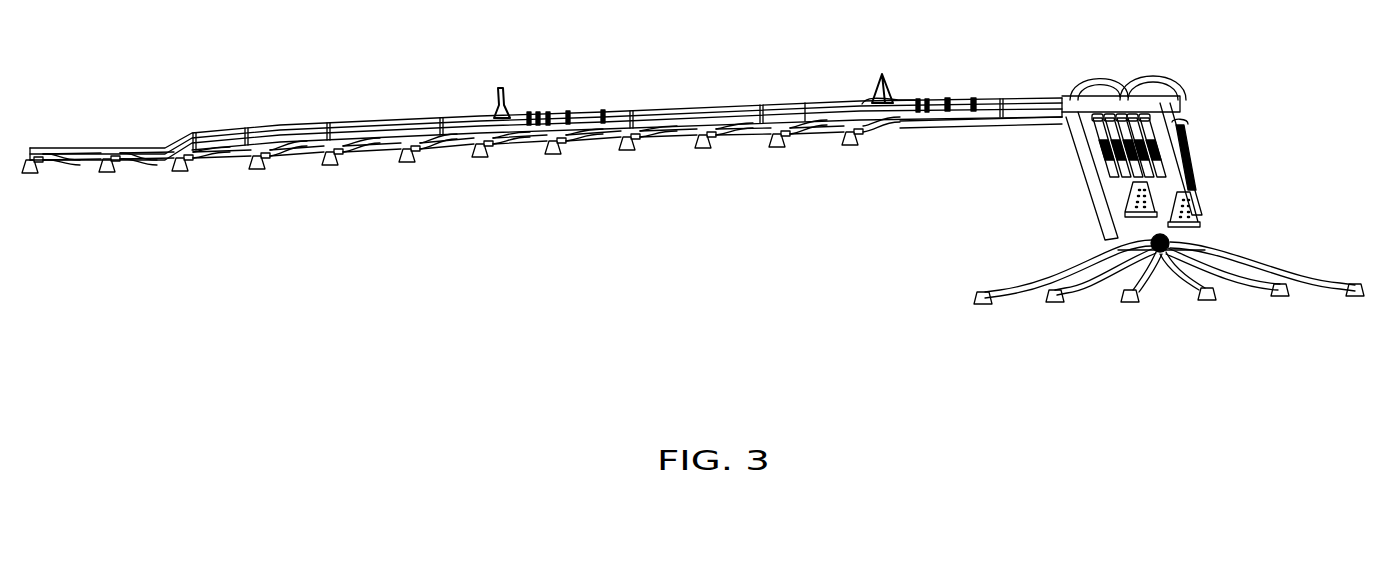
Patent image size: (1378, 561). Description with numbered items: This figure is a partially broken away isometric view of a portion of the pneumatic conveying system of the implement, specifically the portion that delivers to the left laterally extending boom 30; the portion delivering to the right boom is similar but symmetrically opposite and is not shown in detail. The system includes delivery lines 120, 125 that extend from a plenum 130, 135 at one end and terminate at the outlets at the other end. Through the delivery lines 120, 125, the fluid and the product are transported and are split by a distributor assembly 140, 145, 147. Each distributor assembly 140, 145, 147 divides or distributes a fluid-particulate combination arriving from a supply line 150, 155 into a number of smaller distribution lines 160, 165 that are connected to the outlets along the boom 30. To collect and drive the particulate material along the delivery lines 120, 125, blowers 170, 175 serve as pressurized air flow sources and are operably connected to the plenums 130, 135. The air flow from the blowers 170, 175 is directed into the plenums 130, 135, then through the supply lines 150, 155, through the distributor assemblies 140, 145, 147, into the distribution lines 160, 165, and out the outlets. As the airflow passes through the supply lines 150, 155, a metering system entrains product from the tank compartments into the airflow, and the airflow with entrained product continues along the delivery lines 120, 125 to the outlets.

The left laterally extending boom 30 is at (670, 101).
The delivery line 120 is at (977, 87).
The delivery line 125 is at (958, 124).
The plenum 130 is at (1197, 207).
The plenum 135 is at (1133, 208).
The distributor assembly 140 is at (934, 89).
The distributor assembly 145 is at (545, 113).
The distributor assembly 147 is at (1152, 250).
The supply line 150 is at (1046, 96).
The supply line 155 is at (1042, 111).
The distribution lines 160 is at (884, 78).
The distribution lines 165 is at (500, 88).
The blower 170 is at (1196, 138).
The blower 175 is at (1132, 178).